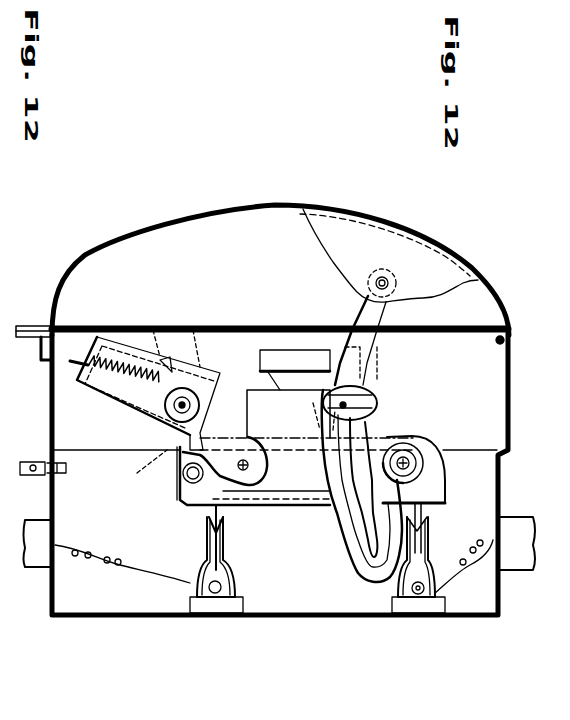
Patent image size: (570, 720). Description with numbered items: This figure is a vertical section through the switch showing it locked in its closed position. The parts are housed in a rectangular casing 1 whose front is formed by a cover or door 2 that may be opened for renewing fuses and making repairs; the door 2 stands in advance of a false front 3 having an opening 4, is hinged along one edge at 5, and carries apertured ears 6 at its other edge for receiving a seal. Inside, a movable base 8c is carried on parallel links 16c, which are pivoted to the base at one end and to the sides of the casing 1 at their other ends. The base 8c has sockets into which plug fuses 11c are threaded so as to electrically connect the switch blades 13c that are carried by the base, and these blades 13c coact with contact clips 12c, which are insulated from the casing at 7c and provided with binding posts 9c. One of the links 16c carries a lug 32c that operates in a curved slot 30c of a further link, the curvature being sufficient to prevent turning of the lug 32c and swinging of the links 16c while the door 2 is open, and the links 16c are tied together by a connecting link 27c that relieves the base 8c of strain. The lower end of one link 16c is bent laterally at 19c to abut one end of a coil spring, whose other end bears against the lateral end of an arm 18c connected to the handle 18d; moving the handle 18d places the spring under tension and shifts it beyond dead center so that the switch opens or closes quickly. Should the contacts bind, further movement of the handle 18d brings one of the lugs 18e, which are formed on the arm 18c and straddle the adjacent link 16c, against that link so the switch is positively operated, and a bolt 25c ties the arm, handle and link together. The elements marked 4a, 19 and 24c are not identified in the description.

The casing 1 is at (28, 478).
The cover or door 2 is at (348, 227).
The false front 3 is at (470, 333).
The opening 4 is at (513, 410).
The casing flange 4a is at (510, 463).
The hinge 5 is at (517, 340).
The apertured ears 6 is at (24, 323).
The insulation 7c is at (223, 610).
The movable base 8c is at (300, 505).
The binding posts 9c is at (407, 597).
The plug fuses 11c is at (290, 357).
The contact clips 12c is at (225, 530).
The switch blades 13c is at (207, 525).
The parallel links 16c is at (377, 417).
The arm 18c is at (360, 320).
The handle 18d is at (143, 483).
The lugs 18e is at (148, 360).
The spring 19 is at (120, 345).
The laterally bent lower end 19c is at (141, 311).
The pivot 24c is at (155, 400).
The bolt 25c is at (170, 420).
The connecting link 27c is at (268, 505).
The slot 30c is at (363, 547).
The lug 32c is at (312, 397).